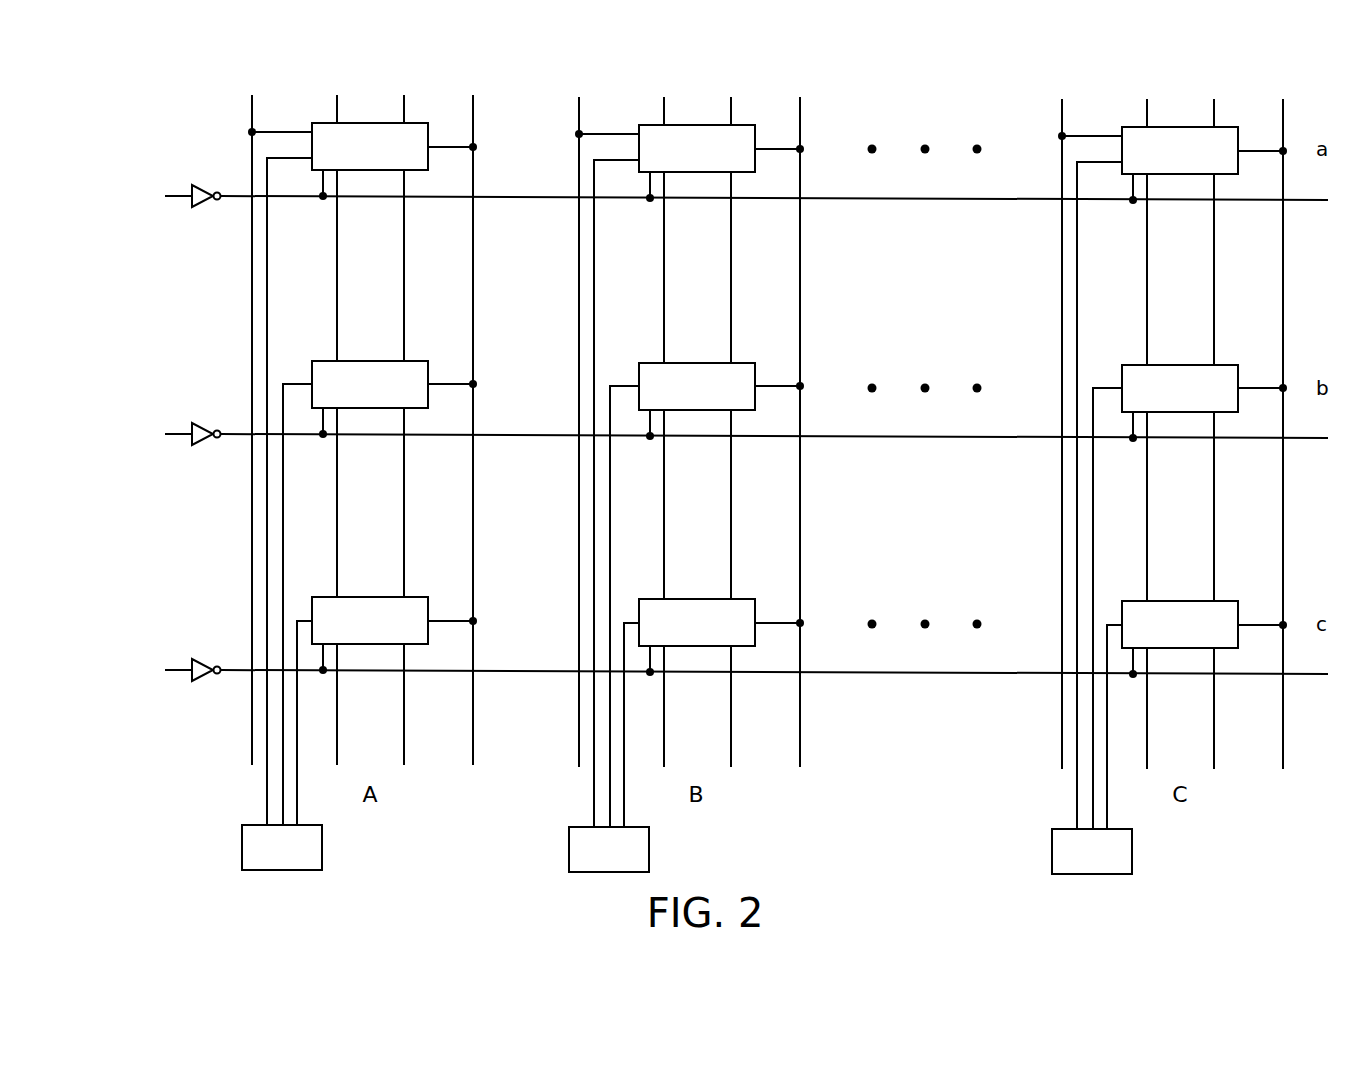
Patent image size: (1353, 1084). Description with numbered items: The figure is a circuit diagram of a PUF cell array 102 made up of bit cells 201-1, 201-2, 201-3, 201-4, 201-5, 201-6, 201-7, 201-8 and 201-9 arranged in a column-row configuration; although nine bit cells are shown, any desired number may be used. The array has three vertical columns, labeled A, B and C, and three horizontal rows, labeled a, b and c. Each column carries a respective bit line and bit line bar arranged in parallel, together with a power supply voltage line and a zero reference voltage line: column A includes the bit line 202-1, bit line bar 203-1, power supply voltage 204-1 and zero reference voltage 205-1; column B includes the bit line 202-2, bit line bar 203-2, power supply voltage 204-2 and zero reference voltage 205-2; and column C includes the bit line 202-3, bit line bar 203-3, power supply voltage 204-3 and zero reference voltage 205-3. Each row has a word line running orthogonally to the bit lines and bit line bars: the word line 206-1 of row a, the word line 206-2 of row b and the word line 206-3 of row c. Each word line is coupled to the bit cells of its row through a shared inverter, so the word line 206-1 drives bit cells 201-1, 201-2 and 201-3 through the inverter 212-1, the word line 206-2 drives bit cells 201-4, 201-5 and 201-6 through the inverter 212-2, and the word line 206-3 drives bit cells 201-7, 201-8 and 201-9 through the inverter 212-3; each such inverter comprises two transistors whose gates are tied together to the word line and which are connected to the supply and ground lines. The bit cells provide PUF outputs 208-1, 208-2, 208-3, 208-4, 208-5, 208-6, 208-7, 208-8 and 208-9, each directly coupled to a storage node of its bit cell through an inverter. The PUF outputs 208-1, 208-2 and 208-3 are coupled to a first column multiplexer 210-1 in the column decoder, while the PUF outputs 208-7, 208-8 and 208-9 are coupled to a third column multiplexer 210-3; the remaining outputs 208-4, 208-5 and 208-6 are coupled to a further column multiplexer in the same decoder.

The PUF cell array 102 is at (150, 117).
The bit cell 201-1 is at (343, 160).
The bit cell 201-2 is at (670, 162).
The bit cell 201-3 is at (1153, 164).
The bit cell 201-4 is at (343, 398).
The bit cell 201-5 is at (670, 400).
The bit cell 201-6 is at (1153, 402).
The bit cell 201-7 is at (343, 634).
The bit cell 201-8 is at (670, 636).
The bit cell 201-9 is at (1153, 638).
The bit line 202-1 is at (252, 419).
The bit line 202-2 is at (579, 421).
The bit line 202-3 is at (1062, 423).
The bit line bar 203-1 is at (473, 419).
The bit line bar 203-2 is at (800, 421).
The bit line bar 203-3 is at (1283, 423).
The power supply voltage 204-1 is at (337, 419).
The power supply voltage 204-2 is at (664, 421).
The power supply voltage 204-3 is at (1147, 423).
The zero reference voltage 205-1 is at (404, 419).
The zero reference voltage 205-2 is at (731, 421).
The zero reference voltage 205-3 is at (1214, 423).
The word line 206-1 is at (713, 196).
The word line 206-2 is at (713, 434).
The word line 206-3 is at (713, 670).
The PUF output 208-1 is at (267, 251).
The PUF output 208-2 is at (594, 253).
The PUF output 208-3 is at (1077, 256).
The PUF output 208-4 is at (283, 482).
The PUF output 208-5 is at (610, 484).
The PUF output 208-6 is at (1093, 487).
The PUF output 208-7 is at (297, 715).
The PUF output 208-8 is at (624, 717).
The PUF output 208-9 is at (1107, 720).
The first column multiplexer 210-1 is at (256, 863).
The third column multiplexer 210-3 is at (583, 865).
The inverter 212-1 is at (206, 186).
The inverter 212-2 is at (206, 424).
The inverter 212-3 is at (206, 660).